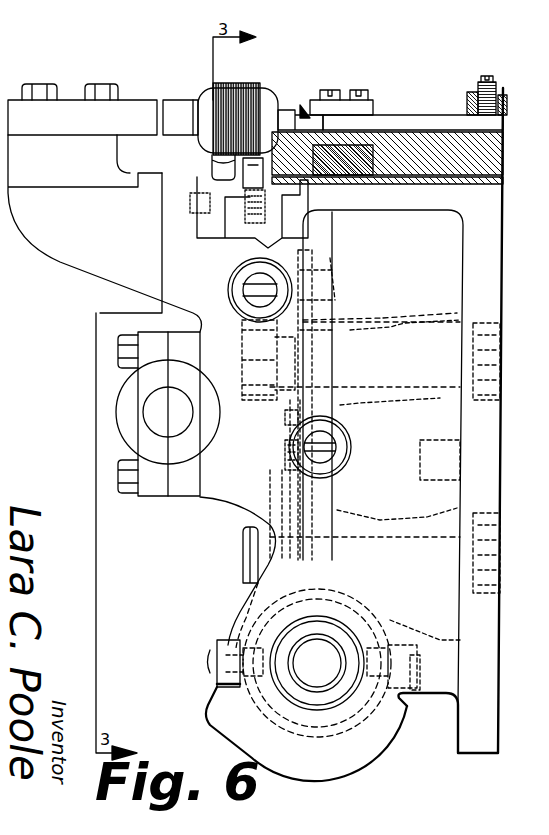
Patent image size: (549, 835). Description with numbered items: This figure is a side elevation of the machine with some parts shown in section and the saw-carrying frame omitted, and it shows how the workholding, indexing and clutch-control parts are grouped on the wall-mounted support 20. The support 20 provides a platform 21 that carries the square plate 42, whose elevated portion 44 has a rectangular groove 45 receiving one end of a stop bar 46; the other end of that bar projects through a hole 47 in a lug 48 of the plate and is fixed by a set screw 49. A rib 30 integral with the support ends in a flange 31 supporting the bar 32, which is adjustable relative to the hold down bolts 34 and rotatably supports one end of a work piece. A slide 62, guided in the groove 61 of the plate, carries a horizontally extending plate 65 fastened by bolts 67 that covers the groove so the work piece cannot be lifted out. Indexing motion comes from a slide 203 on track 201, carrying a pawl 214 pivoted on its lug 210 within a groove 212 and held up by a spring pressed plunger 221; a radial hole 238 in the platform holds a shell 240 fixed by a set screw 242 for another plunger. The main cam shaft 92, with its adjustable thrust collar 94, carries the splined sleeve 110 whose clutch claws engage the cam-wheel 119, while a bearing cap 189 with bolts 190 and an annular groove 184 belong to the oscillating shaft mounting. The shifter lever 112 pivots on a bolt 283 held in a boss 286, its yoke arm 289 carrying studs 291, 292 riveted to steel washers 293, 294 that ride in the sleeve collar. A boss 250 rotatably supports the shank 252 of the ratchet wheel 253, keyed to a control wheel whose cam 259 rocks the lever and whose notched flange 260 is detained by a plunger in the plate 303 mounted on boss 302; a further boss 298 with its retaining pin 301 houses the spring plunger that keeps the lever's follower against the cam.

The support 20 is at (473, 636).
The platform 21 is at (392, 192).
The rib 30 is at (240, 488).
The flange 31 is at (52, 172).
The bar 32 is at (66, 112).
The hold down bolts 34 is at (37, 84).
The square plate 42 is at (432, 150).
The elevated portion 44 is at (365, 127).
The rectangular groove 45 is at (306, 108).
The stop bar 46 is at (412, 122).
The hole 47 is at (472, 95).
The lug 48 is at (505, 95).
The set screw 49 is at (486, 80).
The groove 61 is at (378, 165).
The slide 62 is at (345, 165).
The horizontally extending plate 65 is at (345, 108).
The bolts 67 is at (335, 90).
The main cam shaft 92 is at (310, 672).
The adjustable collar 94 is at (345, 688).
The sleeve 110 is at (270, 700).
The shifter fork (shifter lever) 112 is at (318, 497).
The cam-wheel 119 is at (350, 760).
The annular groove 184 is at (215, 440).
The bearing cap 189 is at (130, 430).
The bolts 190 is at (130, 482).
The track 201 is at (260, 283).
The slide 203 is at (278, 222).
The lug 210 is at (248, 155).
The groove 212 is at (242, 197).
The pawl 214 is at (222, 168).
The spring pressed plunger 221 is at (203, 212).
The hole 238 is at (192, 200).
The shell 240 is at (232, 177).
The set screw 242 is at (195, 203).
The boss 250 is at (408, 320).
The shank 252 is at (370, 352).
The ratchet wheel 253 is at (252, 363).
The cam 259 is at (332, 406).
The flange 260 is at (288, 413).
The bolt 283 is at (245, 562).
The boss 286 is at (427, 520).
The yoke arm 289 is at (235, 622).
The stud 291 is at (255, 672).
The stud 292 is at (375, 688).
The steel washer 293 is at (218, 648).
The steel washer 294 is at (412, 650).
The boss 298 is at (338, 458).
The pin 301 is at (303, 465).
The boss 302 is at (434, 448).
The plate 303 is at (285, 458).